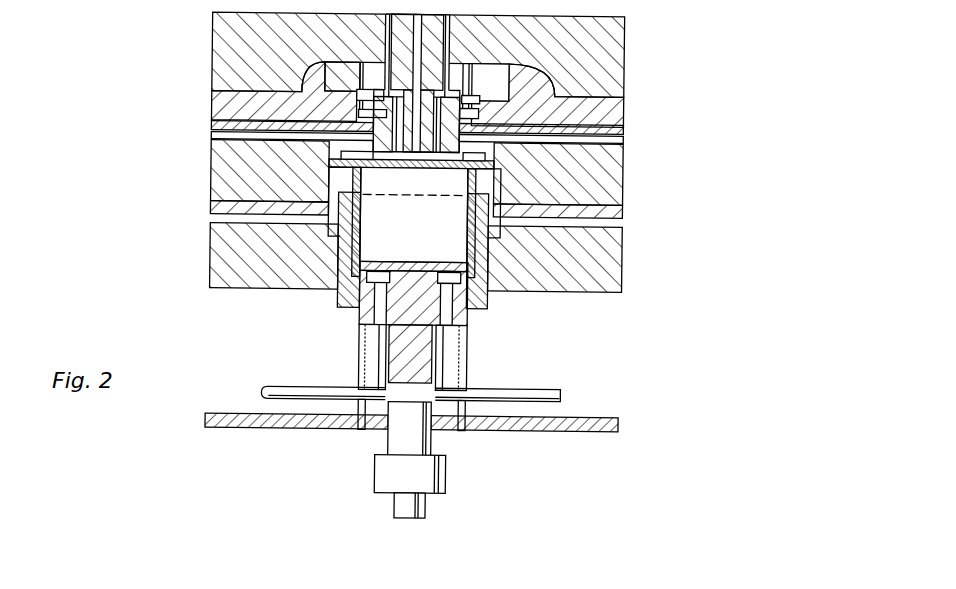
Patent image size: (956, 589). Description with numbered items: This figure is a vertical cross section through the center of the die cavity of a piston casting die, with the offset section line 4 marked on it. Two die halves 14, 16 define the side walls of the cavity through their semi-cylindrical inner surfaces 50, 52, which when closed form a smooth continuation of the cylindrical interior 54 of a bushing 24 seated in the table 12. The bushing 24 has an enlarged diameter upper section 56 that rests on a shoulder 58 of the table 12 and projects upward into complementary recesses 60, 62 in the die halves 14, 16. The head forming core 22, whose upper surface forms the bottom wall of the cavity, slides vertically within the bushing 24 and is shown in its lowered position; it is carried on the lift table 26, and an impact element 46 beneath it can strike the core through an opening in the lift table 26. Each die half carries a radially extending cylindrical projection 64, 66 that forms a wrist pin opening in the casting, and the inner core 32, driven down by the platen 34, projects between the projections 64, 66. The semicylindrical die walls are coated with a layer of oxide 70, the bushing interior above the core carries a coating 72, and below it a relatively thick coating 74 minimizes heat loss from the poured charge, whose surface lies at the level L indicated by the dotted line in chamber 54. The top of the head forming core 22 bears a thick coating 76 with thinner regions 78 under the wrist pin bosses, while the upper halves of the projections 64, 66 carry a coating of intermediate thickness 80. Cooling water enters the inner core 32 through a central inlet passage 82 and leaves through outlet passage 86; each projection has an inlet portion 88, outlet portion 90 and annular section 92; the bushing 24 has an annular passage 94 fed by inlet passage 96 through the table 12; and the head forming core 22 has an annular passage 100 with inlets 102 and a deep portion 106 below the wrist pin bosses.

The section line 4— 4 is at (295, 174).
The table 12 is at (572, 291).
The die half 14 is at (210, 110).
The die half 16 is at (620, 104).
The head forming core 22 is at (419, 369).
The bushing 24 is at (490, 302).
The lift table 26 is at (598, 418).
The inner core 32 is at (470, 162).
The platen 34 is at (612, 45).
The impact element 46 is at (449, 483).
The semi-cylindrical inner surface 50 is at (358, 73).
The semi-cylindrical inner surface 52 is at (471, 85).
The cylindrical interior 54 is at (430, 229).
The enlarged diameter upper section 56 is at (336, 236).
The shoulder 58 is at (497, 228).
The recess 60 is at (330, 165).
The recess 62 is at (500, 182).
The cylindrical projection 64 is at (356, 154).
The cylindrical projection 66 is at (454, 207).
The layer of oxide 70 is at (470, 70).
The coating 72 is at (360, 190).
The relatively thick coating 74 is at (360, 222).
The relatively thick coating 76 is at (415, 266).
The thinner coating regions 78 is at (448, 270).
The coating of intermediate thickness 80 is at (358, 96).
The inlet passage 82 is at (418, 30).
The outlet passage 86 is at (403, 93).
The inlet portion 88 is at (210, 126).
The outlet portion 90 is at (210, 138).
The annular section 92 is at (482, 142).
The annular passage 94 is at (333, 185).
The inlet passage 96 is at (210, 222).
The annular passage 100 is at (380, 272).
The inlet 102 is at (446, 313).
The deep portion 106 is at (470, 277).
The level L is at (380, 198).